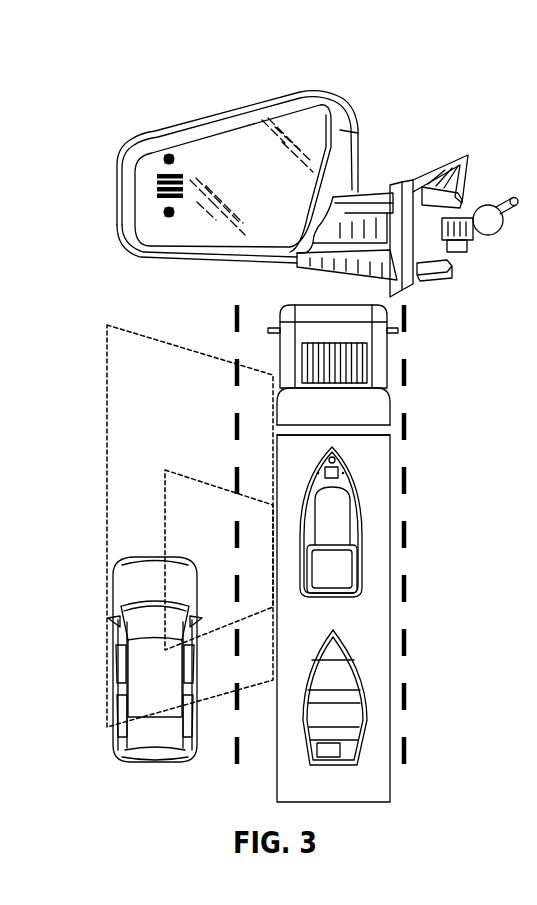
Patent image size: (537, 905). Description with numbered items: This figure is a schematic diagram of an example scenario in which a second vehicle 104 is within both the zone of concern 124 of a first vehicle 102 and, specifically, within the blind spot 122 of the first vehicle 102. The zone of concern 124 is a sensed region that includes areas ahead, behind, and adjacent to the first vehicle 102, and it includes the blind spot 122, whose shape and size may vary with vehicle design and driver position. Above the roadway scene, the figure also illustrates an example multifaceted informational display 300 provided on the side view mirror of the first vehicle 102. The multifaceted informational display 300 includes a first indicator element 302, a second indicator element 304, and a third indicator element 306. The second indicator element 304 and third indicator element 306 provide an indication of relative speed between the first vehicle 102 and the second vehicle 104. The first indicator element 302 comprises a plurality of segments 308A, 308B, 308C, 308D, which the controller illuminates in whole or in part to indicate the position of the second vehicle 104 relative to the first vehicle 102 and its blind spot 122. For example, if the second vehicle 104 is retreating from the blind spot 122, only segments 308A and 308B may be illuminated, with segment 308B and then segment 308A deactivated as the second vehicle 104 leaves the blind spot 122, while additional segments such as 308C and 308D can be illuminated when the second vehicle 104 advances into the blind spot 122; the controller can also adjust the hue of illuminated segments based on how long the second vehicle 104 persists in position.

The multifaceted informational display 300 is at (274, 169).
The first indicator element 302 is at (186, 178).
The second indicator element 304 is at (167, 153).
The third indicator element 306 is at (168, 218).
The segment 308A is at (157, 197).
The segment 308B is at (157, 190).
The segment 308C is at (157, 183).
The segment 308D is at (157, 176).
The first vehicle 102 is at (377, 463).
The second vehicle 104 is at (147, 695).
The blind spot 122 is at (165, 532).
The zone of concern 124 is at (107, 398).